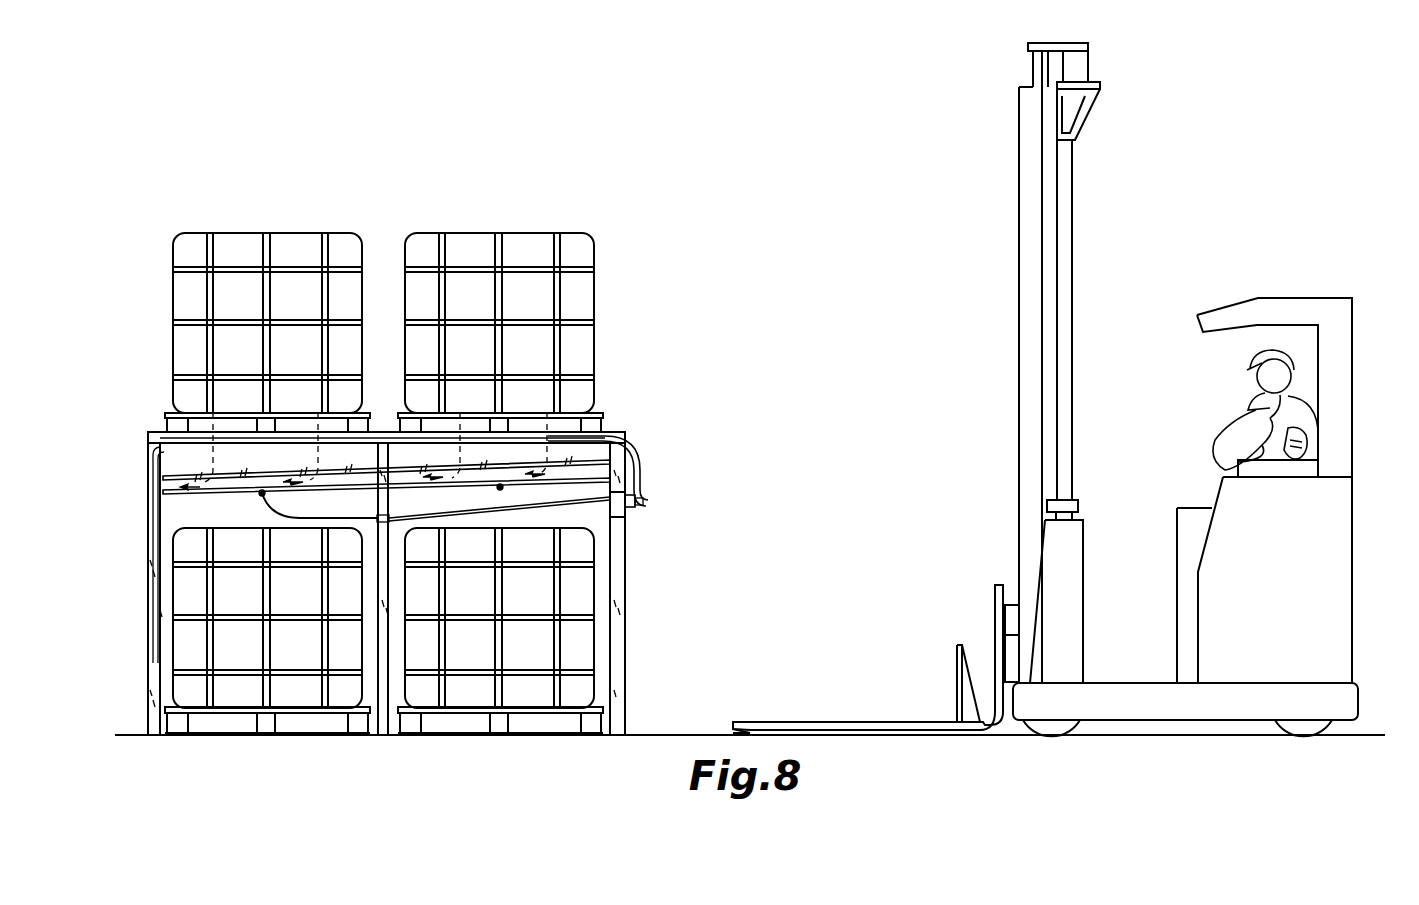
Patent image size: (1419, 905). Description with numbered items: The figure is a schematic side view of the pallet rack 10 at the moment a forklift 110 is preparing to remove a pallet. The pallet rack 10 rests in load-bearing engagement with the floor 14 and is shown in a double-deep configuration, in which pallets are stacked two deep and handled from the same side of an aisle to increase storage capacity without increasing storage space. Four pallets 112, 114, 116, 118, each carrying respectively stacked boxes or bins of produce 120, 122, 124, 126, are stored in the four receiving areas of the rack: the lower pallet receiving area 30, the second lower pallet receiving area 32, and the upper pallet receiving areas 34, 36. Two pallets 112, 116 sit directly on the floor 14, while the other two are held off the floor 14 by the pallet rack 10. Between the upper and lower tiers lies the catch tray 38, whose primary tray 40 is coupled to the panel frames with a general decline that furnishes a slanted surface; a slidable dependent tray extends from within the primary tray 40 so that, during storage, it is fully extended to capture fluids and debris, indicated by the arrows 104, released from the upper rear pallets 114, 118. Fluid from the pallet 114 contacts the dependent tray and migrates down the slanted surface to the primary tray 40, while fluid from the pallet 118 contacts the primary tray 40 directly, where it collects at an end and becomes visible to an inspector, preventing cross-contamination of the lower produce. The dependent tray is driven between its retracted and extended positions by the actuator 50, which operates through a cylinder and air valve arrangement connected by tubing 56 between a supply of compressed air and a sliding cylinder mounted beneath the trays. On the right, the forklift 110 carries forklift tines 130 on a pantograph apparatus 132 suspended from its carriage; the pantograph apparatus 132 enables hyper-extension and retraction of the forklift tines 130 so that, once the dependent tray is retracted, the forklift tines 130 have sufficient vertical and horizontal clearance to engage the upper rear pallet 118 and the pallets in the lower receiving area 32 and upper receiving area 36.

The pallet rack 10 is at (652, 443).
The floor 14 is at (690, 735).
The lower pallet receiving area 30 is at (565, 740).
The second lower pallet receiving area 32 is at (212, 735).
The upper pallet receiving area 34 is at (381, 432).
The upper pallet receiving area 36 is at (148, 437).
The catch tray 38 is at (572, 488).
The primary tray 40 is at (213, 492).
The actuator 50 is at (630, 515).
The tubing 56 is at (655, 500).
The arrows 104 is at (550, 452).
The forklift 110 is at (1287, 297).
The pallet 112 is at (500, 725).
The pallet 114 is at (267, 725).
The pallet 116 is at (592, 413).
The pallet 118 is at (167, 420).
The stacked boxes or bins of produce 120 is at (454, 599).
The stacked boxes or bins of produce 122 is at (222, 599).
The stacked boxes or bins of produce 124 is at (454, 304).
The stacked boxes or bins of produce 126 is at (222, 304).
The forklift tines 130 is at (835, 722).
The pantograph apparatus 132 is at (1013, 605).